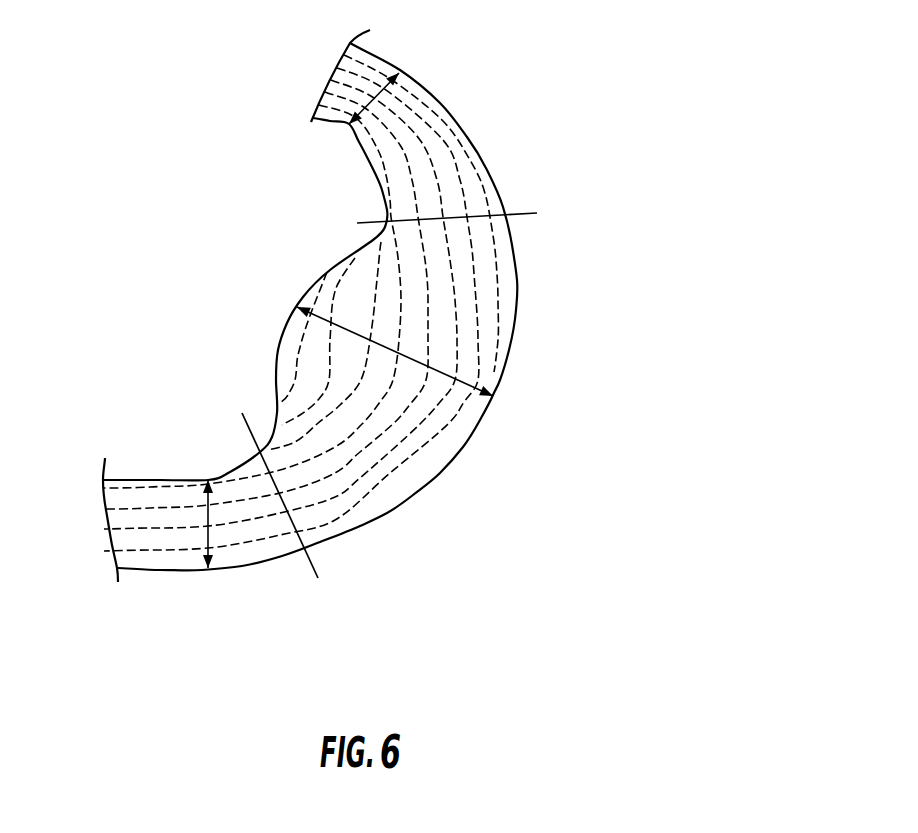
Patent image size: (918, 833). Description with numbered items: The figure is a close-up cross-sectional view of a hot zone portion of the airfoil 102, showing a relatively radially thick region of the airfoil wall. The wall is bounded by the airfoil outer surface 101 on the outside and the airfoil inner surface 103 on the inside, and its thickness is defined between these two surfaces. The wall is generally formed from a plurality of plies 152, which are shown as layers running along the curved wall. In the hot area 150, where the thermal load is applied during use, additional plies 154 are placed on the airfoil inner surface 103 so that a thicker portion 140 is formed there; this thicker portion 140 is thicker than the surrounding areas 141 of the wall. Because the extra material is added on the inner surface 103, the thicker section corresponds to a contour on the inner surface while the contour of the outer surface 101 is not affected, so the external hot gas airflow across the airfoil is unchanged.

The airfoil outer surface 101 is at (365, 532).
The airfoil 102 is at (677, 227).
The airfoil inner surface 103 is at (180, 478).
The thicker portion 140 is at (350, 330).
The surrounding areas 141 is at (370, 104).
The hot area 150 is at (582, 421).
The plies 152 is at (390, 437).
The additional plies 154 is at (284, 396).